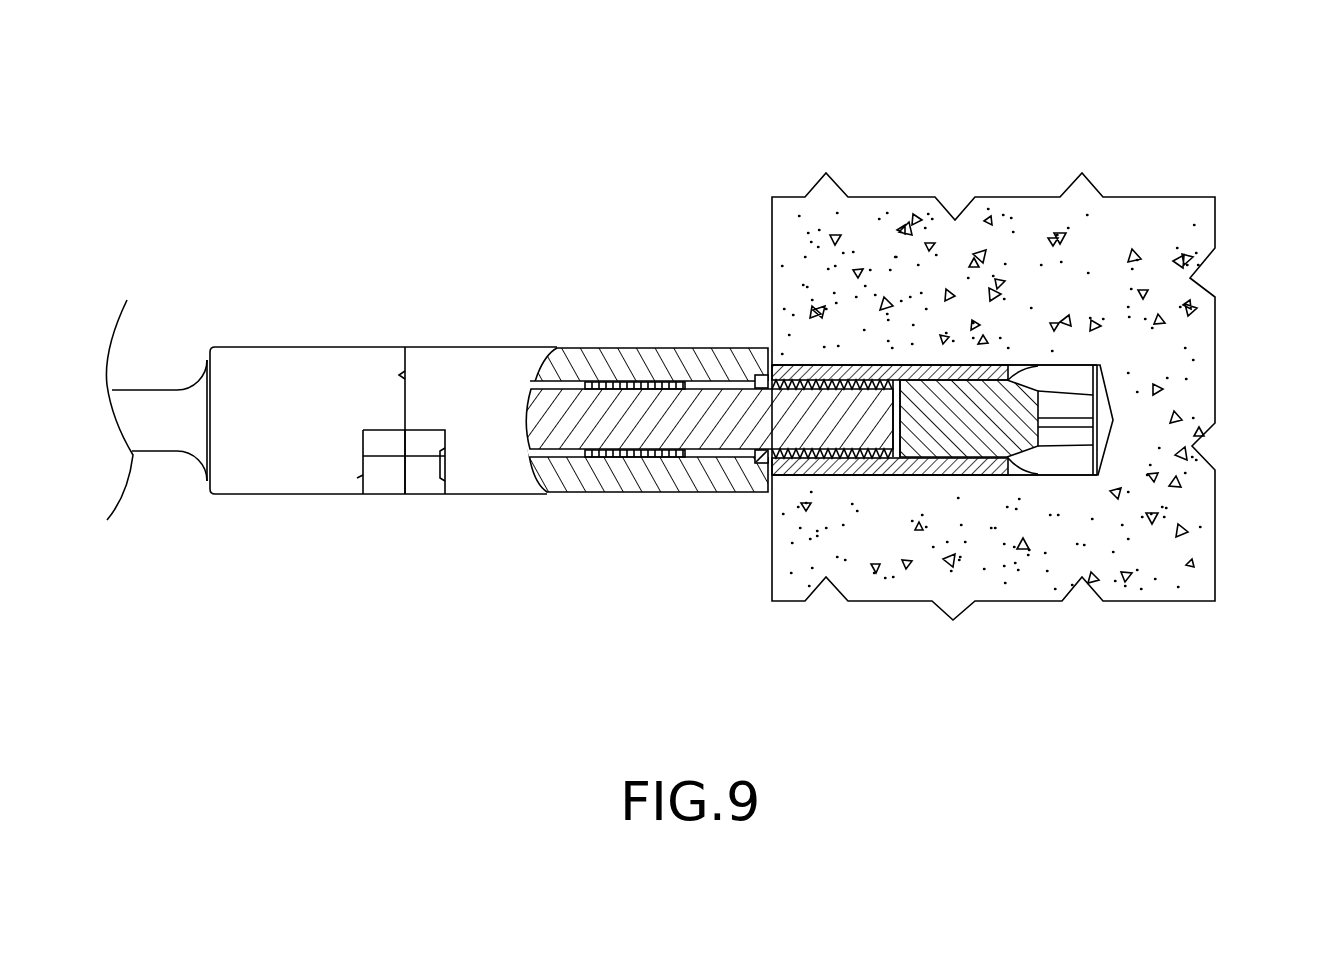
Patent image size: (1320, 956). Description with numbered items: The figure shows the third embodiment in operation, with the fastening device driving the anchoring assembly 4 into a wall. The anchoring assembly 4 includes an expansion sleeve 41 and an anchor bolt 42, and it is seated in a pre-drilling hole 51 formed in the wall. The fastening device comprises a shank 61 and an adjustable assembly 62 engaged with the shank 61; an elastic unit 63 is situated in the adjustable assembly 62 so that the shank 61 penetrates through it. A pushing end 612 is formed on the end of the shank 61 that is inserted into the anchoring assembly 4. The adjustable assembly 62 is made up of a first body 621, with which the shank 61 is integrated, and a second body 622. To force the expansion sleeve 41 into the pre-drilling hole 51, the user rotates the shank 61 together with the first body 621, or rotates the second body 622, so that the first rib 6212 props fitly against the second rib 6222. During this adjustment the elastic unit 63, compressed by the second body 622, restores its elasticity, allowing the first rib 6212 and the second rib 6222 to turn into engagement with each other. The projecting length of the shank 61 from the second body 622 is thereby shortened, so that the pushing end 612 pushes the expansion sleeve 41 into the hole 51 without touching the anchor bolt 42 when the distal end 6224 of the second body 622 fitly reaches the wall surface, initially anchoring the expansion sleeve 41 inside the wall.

The anchoring assembly 4 is at (934, 403).
The expansion sleeve 41 is at (935, 476).
The anchor bolt 42 is at (957, 410).
The pre-drilling hole 51 is at (1105, 410).
The shank 61 is at (727, 408).
The pushing end 612 is at (917, 383).
The adjustable assembly 62 is at (364, 331).
The first body 621 is at (257, 348).
The first rib 6212 is at (377, 432).
The second body 622 is at (490, 355).
The second rib 6222 is at (419, 432).
The distal end 6224 is at (787, 480).
The elastic unit 63 is at (652, 456).